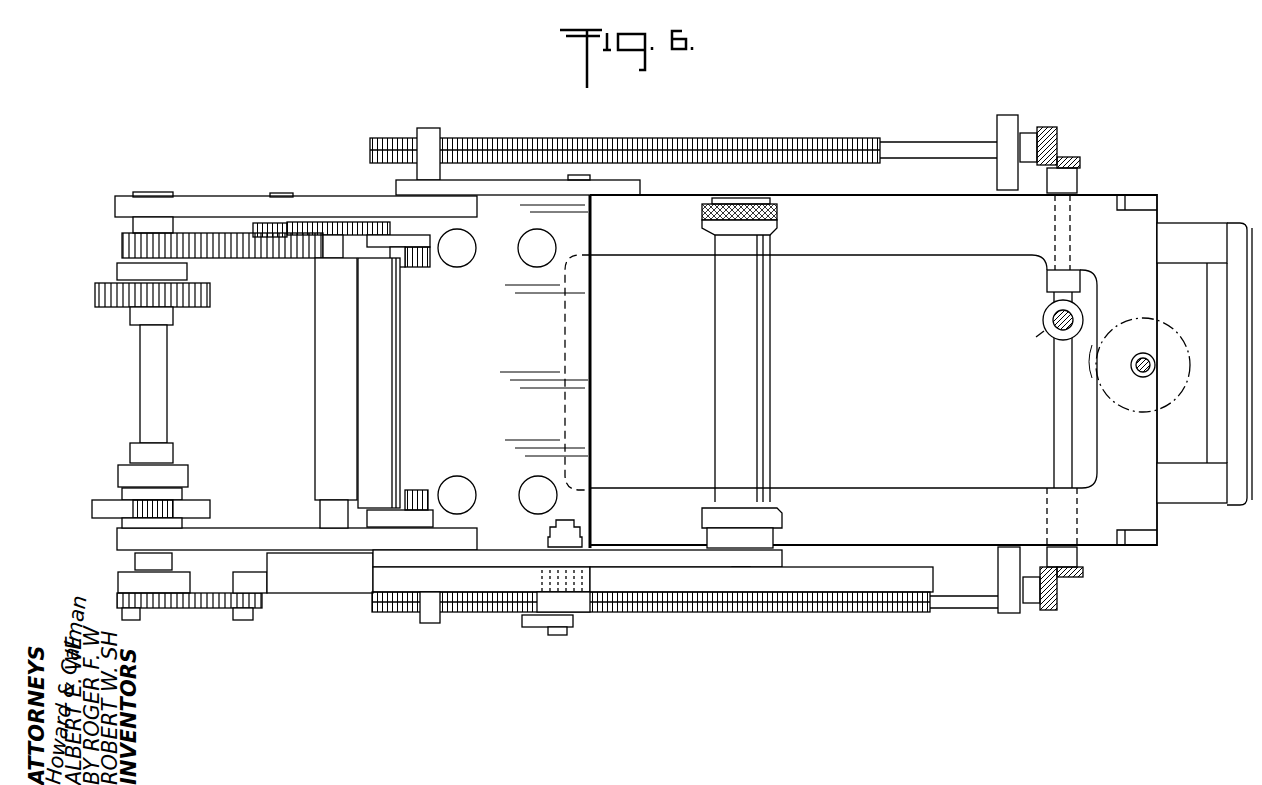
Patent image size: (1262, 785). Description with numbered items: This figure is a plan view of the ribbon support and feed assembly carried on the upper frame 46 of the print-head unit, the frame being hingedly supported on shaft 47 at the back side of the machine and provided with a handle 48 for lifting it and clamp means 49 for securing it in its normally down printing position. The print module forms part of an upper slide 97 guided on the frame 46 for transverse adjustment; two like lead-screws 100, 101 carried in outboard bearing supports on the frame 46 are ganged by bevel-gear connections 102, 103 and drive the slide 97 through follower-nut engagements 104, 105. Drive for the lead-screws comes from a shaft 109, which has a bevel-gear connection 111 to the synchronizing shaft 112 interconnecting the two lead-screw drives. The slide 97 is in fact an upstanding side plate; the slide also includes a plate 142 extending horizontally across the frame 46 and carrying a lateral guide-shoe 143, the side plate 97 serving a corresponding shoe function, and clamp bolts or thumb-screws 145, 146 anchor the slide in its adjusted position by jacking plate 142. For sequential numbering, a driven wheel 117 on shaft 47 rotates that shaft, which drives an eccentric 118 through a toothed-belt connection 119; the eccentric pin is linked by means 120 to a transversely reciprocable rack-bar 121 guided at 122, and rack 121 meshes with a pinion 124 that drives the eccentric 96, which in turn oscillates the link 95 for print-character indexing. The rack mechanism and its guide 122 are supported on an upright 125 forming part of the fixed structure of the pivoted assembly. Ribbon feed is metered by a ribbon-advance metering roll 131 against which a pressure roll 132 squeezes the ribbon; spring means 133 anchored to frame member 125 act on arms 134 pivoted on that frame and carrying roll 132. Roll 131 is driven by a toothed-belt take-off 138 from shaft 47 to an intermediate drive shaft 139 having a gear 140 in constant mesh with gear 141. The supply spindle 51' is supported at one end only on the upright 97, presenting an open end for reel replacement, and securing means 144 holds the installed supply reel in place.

The upper frame 46 is at (888, 494).
The hinge shaft 47 is at (163, 370).
The handle 48 is at (1214, 288).
The clamp means 49 is at (1137, 305).
The supply spindle 51' is at (728, 391).
The link 95 is at (540, 630).
The eccentric 96 is at (559, 636).
The upper slide 97 is at (652, 548).
The lead-screw 100 is at (668, 138).
The lead-screw 101 is at (709, 606).
The bevel-gear connection 102 is at (1068, 140).
The bevel-gear connection 103 is at (1069, 602).
The follower-nut engagement 104 is at (428, 128).
The follower-nut engagement 105 is at (429, 622).
The shaft 109 is at (1046, 318).
The bevel-gear connection 111 is at (1034, 346).
The synchronizing shaft 112 is at (1053, 380).
The driven wheel 117 is at (195, 300).
The eccentric 118 is at (188, 586).
The toothed-belt connection 119 is at (200, 500).
The link means 120 is at (197, 601).
The rack-bar 121 is at (491, 577).
The guide means 122 is at (297, 592).
The pinion 124 is at (602, 578).
The upright 125 is at (206, 198).
The ribbon-advance metering roll 131 is at (318, 322).
The pressure roll 132 is at (400, 366).
The spring means 133 is at (420, 275).
The arms 134 is at (378, 250).
The toothed-belt take-off 138 is at (212, 256).
The intermediate drive shaft 139 is at (284, 192).
The gear 140 is at (252, 224).
The gear 141 is at (320, 230).
The plate 142 is at (580, 368).
The lateral guide-shoe 143 is at (624, 184).
The securing means 144 is at (780, 215).
The clamp bolt 145 is at (521, 228).
The clamp bolt 146 is at (530, 478).